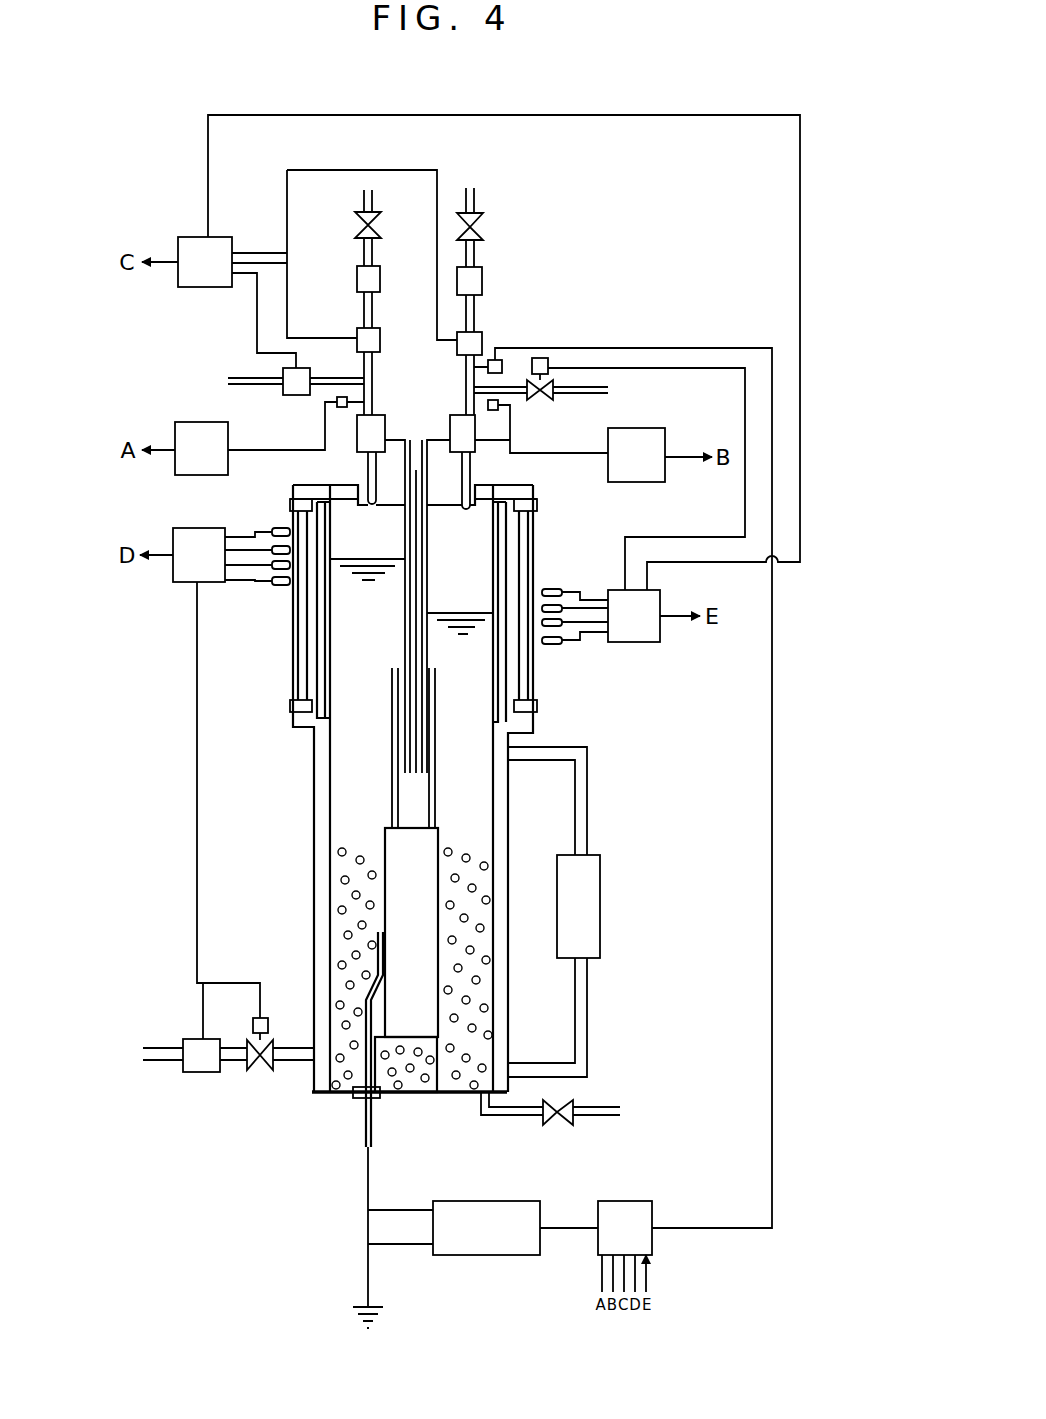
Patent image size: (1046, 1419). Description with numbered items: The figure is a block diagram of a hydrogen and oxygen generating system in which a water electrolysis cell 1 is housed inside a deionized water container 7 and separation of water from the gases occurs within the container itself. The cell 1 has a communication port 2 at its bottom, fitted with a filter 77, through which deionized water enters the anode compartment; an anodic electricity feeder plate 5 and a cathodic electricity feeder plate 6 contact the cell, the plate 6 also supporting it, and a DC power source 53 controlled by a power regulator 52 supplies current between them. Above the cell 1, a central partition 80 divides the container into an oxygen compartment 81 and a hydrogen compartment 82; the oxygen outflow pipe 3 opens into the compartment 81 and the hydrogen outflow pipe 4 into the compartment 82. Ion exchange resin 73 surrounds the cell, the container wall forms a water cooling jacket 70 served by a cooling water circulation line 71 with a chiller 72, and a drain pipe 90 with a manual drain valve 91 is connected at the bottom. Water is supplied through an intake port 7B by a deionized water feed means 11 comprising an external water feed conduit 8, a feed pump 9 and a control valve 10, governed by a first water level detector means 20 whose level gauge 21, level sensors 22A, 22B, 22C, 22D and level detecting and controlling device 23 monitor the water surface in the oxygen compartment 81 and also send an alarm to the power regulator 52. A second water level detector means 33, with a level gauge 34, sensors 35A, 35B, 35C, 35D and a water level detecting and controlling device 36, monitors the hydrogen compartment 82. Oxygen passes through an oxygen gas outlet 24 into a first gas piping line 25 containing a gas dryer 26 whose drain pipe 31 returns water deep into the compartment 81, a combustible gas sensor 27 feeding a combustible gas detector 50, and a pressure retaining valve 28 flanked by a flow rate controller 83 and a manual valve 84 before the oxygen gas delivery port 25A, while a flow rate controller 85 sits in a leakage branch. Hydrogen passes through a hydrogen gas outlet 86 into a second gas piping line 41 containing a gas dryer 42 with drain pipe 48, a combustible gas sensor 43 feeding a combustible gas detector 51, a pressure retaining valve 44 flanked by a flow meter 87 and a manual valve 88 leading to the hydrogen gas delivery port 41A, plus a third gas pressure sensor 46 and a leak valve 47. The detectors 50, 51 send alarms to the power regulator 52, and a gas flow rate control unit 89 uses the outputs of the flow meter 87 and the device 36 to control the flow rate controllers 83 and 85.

The water electrolysis cell 1 is at (400, 840).
The communication port 2 is at (415, 1070).
The oxygen outflow pipe 3 is at (392, 690).
The hydrogen outflow pipe 4 is at (435, 688).
The anodic electricity feeder plate 5 is at (368, 1002).
The cathodic electricity feeder plate 6 is at (490, 1050).
The deionized water container 7 is at (495, 817).
The water intake port 7B is at (318, 1092).
The external water feed conduit 8 is at (155, 1060).
The feed pump 9 is at (207, 1072).
The control valve 10 is at (257, 1072).
The deionized water feed means 11 is at (190, 1090).
The first water level detector means 20 is at (225, 598).
The level gauge 21 is at (300, 660).
The level sensor 22A is at (280, 528).
The level sensor 22B is at (276, 546).
The level sensor 22C is at (278, 569).
The level sensor 22D is at (283, 585).
The level detecting and controlling device 23 is at (180, 560).
The oxygen gas outlet 24 is at (378, 506).
The first gas piping line 25 is at (374, 378).
The oxygen gas delivery port 25A is at (368, 190).
The gas dryer 26 is at (385, 426).
The combustible gas sensor 27 is at (337, 404).
The pressure retaining valve 28 is at (380, 278).
The drain pipe 31 is at (405, 547).
The second water level detector means 33 is at (640, 655).
The level gauge 34 is at (537, 706).
The sensor 35A is at (548, 589).
The sensor 35B is at (556, 605).
The sensor 35C is at (550, 627).
The sensor 35D is at (556, 645).
The water level detecting and controlling device 36 is at (660, 635).
The second gas piping line 41 is at (482, 312).
The hydrogen gas delivery port 41A is at (477, 189).
The gas dryer 42 is at (475, 444).
The combustible gas sensor 43 is at (498, 406).
The pressure retaining valve 44 is at (482, 279).
The third gas pressure sensor 46 is at (502, 363).
The leak valve 47 is at (548, 376).
The drain pipe 48 is at (428, 524).
The combustible gas detector 50 is at (200, 424).
The combustible gas detector 51 is at (640, 433).
The power regulator 52 is at (652, 1240).
The DC power source 53 is at (486, 1240).
The water cooling jacket 70 is at (508, 848).
The cooling water circulation line 71 is at (587, 1016).
The chiller 72 is at (600, 907).
The ion exchange resin 73 is at (494, 985).
The filter 77 is at (380, 1098).
The central partition 80 is at (420, 573).
The oxygen compartment 81 is at (345, 512).
The hydrogen compartment 82 is at (537, 503).
The flow rate controller 83 is at (380, 341).
The manual valve 84 is at (355, 221).
The flow rate controller 85 is at (283, 372).
The hydrogen gas outlet 86 is at (474, 507).
The flow meter 87 is at (482, 339).
The manual valve 88 is at (483, 220).
The gas flow rate control unit 89 is at (206, 275).
The drain pipe 90 is at (520, 1116).
The manual drain valve 91 is at (565, 1125).